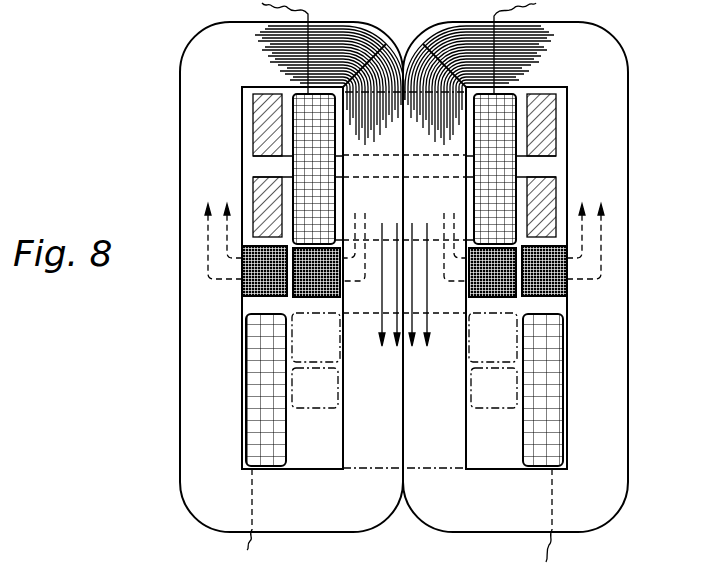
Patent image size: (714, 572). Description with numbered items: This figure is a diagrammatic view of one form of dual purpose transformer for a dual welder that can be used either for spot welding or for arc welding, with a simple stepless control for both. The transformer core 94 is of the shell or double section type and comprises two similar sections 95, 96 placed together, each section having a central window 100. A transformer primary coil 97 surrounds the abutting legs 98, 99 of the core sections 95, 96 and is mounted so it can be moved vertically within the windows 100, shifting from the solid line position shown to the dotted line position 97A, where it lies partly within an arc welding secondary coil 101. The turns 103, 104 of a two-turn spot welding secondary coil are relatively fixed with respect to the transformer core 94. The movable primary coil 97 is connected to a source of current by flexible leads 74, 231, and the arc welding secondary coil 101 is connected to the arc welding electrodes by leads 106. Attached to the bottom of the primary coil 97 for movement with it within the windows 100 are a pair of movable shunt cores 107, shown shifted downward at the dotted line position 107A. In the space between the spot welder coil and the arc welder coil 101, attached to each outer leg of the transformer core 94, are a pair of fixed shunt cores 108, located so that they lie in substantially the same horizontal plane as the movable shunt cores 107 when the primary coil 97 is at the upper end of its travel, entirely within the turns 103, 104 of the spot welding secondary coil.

The flexible lead 74 is at (494, 16).
The flexible lead 231 is at (310, 14).
The transformer core 94 is at (170, 375).
The core section 95 is at (187, 500).
The core section 96 is at (478, 535).
The transformer primary coil 97 is at (503, 107).
The dotted line position of primary coil 97A is at (467, 348).
The abutting leg 98 is at (352, 443).
The abutting leg 99 is at (453, 440).
The central window 100 is at (250, 160).
The arc welding secondary coil 101 is at (498, 464).
The turn of spot welding secondary coil 103 is at (256, 103).
The turn of spot welding secondary coil 104 is at (256, 186).
The lead 106 is at (246, 544).
The movable shunt core 107 is at (320, 298).
The dotted line position of movable shunt core 107A is at (487, 410).
The fixed shunt core 108 is at (242, 278).